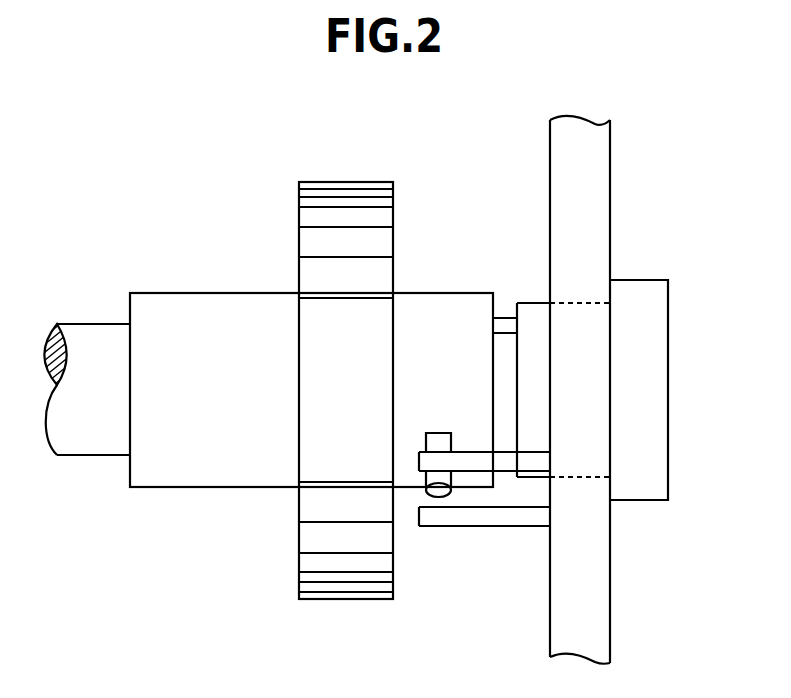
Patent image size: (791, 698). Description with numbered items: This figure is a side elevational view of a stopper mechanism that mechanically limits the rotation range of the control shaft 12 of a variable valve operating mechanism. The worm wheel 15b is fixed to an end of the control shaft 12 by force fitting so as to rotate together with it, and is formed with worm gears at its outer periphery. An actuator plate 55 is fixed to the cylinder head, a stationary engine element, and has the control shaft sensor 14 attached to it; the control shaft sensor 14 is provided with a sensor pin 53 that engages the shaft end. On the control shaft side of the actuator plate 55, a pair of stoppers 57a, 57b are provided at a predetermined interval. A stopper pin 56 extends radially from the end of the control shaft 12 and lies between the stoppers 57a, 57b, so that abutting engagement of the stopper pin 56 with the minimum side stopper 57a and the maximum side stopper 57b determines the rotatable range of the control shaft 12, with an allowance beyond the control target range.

The control shaft 12 is at (92, 338).
The worm wheel 15b is at (352, 180).
The sensor pin 53 is at (503, 330).
The actuator plate 55 is at (595, 187).
The control shaft sensor 14 is at (650, 375).
The stopper pin 56 is at (437, 496).
The minimum side stopper 57a is at (508, 462).
The maximum side stopper 57b is at (535, 518).